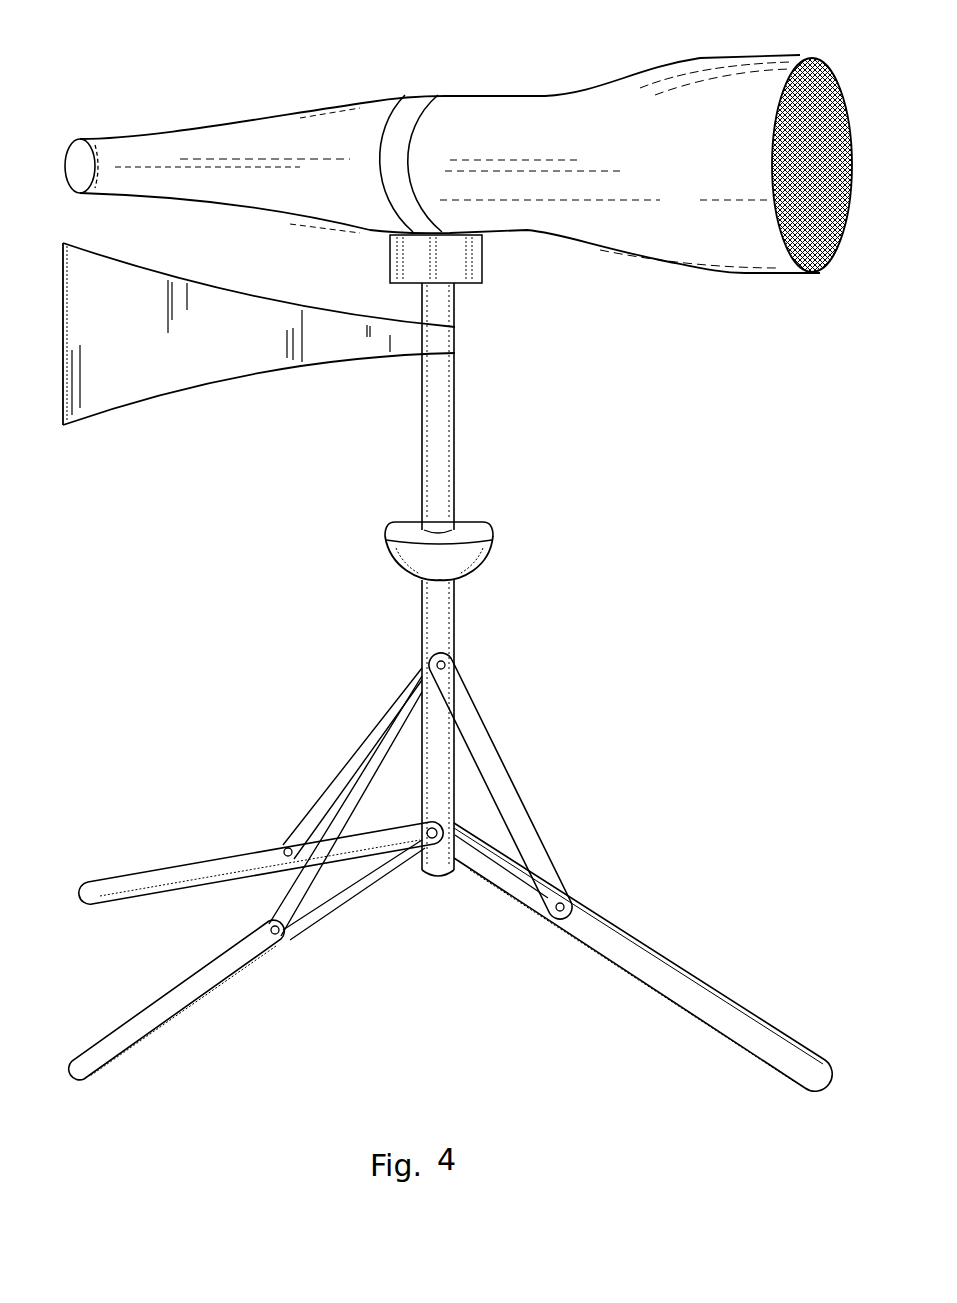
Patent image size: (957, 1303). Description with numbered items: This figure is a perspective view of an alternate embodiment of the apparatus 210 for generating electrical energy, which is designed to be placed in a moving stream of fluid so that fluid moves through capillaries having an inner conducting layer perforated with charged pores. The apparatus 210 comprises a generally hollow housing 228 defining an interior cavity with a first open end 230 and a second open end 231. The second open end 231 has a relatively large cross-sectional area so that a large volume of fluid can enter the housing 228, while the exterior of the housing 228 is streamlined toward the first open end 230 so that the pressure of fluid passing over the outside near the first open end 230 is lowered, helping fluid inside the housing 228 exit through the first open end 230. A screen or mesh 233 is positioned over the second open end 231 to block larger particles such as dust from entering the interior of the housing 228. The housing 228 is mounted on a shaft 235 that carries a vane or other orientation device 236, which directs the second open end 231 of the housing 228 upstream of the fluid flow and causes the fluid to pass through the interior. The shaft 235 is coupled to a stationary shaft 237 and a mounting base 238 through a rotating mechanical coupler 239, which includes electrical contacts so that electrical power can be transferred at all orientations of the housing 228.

The apparatus 210 is at (580, 460).
The housing 228 is at (627, 240).
The first open end 230 is at (67, 140).
The second open end 231 is at (823, 275).
The screen or mesh 233 is at (825, 90).
The shaft 235 is at (442, 400).
The vane or other orientation device 236 is at (170, 382).
The stationary shaft 237 is at (442, 627).
The mounting base 238 is at (565, 862).
The rotating mechanical coupler 239 is at (412, 555).